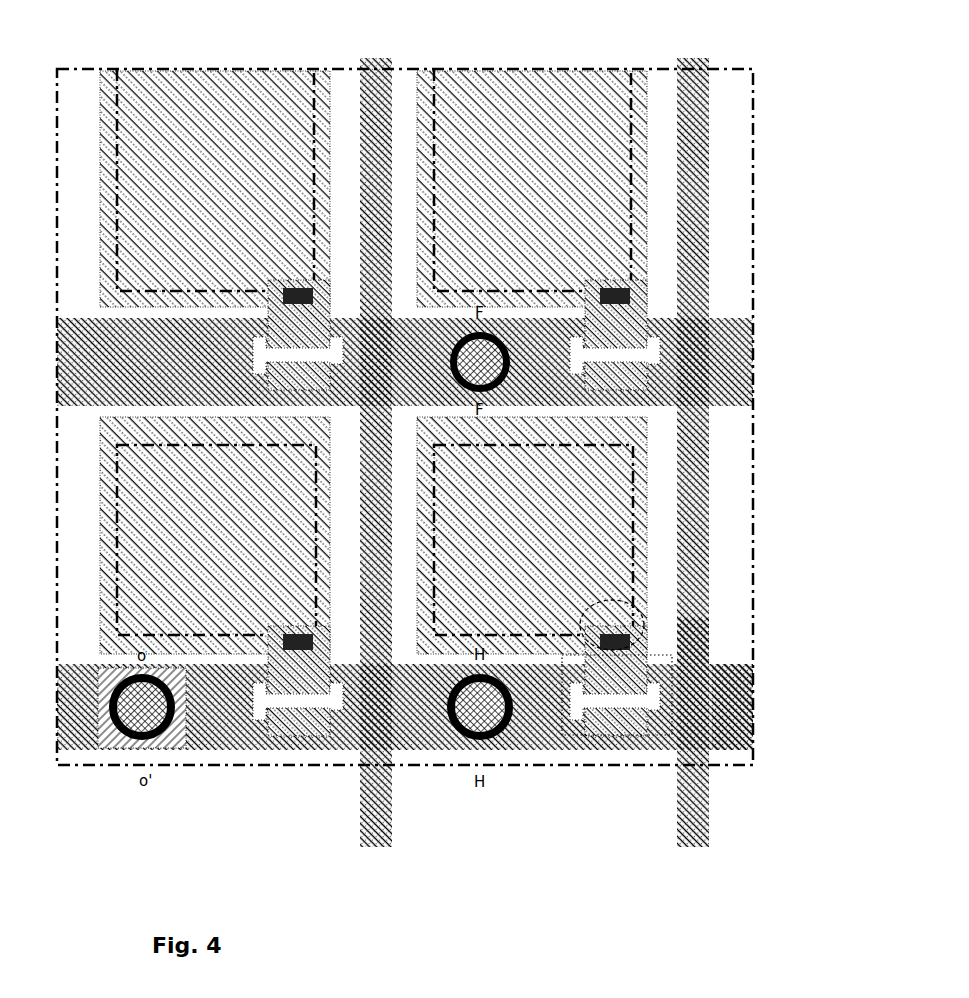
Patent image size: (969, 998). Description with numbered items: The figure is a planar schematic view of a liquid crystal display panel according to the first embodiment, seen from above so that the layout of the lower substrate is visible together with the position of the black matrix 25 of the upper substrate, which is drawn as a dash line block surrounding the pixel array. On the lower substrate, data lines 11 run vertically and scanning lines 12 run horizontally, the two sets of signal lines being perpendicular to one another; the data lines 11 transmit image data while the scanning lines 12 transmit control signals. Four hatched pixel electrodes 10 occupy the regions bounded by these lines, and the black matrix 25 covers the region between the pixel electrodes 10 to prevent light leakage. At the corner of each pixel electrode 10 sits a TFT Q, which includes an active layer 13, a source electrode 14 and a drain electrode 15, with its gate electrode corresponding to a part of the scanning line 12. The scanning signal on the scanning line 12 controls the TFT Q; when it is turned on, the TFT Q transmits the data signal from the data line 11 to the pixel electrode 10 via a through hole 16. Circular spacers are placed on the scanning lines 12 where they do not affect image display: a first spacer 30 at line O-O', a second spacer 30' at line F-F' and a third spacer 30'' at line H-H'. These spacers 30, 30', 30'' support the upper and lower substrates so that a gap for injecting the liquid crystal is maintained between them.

The pixel electrode 10 is at (528, 92).
The data line 11 is at (712, 103).
The scanning line 12 is at (755, 698).
The active layer 13 is at (576, 750).
The source electrode 14 is at (614, 752).
The drain electrode 15 is at (755, 688).
The through hole 16 is at (710, 643).
The black matrix 25 is at (755, 152).
The first spacer 30 is at (142, 754).
The second spacer 30' is at (442, 362).
The third spacer 30'' is at (479, 759).
The TFT Q is at (655, 624).